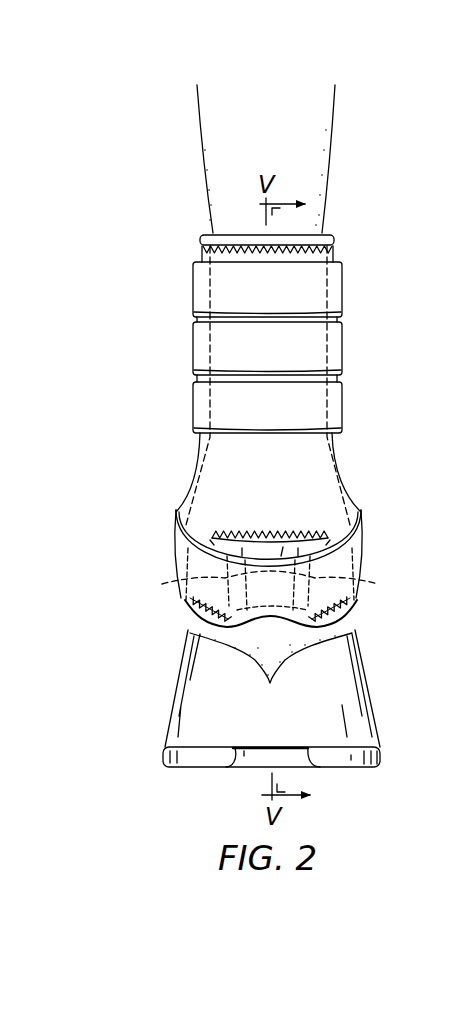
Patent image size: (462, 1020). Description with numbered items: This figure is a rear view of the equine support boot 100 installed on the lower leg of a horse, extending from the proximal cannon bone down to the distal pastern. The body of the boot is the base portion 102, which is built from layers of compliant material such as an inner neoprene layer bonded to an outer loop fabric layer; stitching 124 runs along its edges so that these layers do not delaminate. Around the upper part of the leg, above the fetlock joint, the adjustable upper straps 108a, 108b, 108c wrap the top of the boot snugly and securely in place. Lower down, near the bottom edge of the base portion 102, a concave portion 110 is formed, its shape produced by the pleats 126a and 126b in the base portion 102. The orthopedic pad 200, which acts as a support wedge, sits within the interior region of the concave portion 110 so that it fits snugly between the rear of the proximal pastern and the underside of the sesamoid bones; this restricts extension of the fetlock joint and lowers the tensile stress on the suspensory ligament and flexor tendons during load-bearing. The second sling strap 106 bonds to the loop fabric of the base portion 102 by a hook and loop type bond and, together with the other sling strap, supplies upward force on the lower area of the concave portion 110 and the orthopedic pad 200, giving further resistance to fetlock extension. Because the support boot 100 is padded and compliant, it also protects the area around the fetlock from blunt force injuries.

The equine support boot 100 is at (180, 276).
The base portion 102 is at (208, 493).
The second sling strap 106 is at (364, 545).
The upper strap 108a is at (343, 288).
The upper strap 108b is at (343, 347).
The upper strap 108c is at (343, 406).
The concave portion 110 is at (265, 518).
The stitching 124 is at (337, 250).
The pleat 126a is at (178, 581).
The pleat 126b is at (362, 580).
The orthopedic pad 200 is at (283, 547).